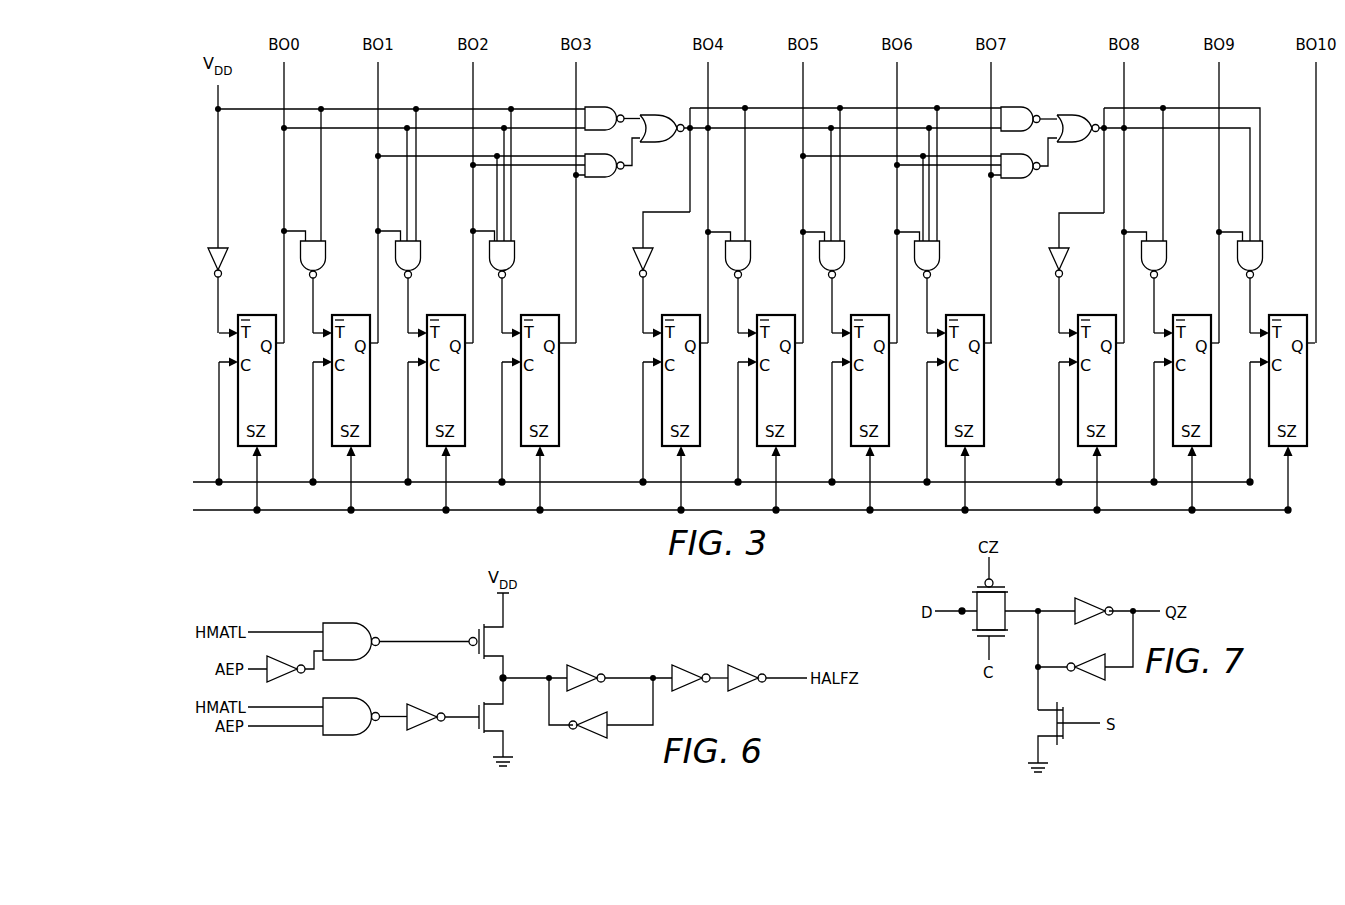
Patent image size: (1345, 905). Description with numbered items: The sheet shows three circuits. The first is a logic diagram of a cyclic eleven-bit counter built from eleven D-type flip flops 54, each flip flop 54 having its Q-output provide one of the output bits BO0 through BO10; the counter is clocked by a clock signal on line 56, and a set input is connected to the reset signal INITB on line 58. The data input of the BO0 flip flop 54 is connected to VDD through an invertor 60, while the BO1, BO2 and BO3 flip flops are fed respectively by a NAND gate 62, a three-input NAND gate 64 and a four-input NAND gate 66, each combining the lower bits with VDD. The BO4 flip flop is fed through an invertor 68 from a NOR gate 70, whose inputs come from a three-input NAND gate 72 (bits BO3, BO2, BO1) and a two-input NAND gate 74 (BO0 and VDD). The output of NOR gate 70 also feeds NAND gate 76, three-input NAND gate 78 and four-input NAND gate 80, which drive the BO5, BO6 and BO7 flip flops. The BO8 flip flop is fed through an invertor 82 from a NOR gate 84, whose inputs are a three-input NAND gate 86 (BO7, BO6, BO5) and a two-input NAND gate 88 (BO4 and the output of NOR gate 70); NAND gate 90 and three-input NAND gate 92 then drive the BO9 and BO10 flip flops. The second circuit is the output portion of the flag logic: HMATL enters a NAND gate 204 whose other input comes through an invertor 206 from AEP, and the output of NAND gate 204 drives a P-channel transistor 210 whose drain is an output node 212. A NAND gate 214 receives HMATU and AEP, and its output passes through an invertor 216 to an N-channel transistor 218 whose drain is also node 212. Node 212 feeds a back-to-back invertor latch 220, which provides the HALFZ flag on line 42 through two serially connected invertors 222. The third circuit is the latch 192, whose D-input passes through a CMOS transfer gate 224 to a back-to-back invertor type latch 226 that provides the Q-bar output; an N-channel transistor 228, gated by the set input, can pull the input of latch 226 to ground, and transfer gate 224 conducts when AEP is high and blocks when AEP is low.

In FIG. 3, the D-type flip flop 54 is at (1299, 405).
In FIG. 3, the clock line 56 is at (588, 481).
In FIG. 3, the reset signal line 58 is at (313, 511).
In FIG. 3, the invertor 60 is at (222, 258).
In FIG. 3, the NAND gate 62 is at (322, 263).
In FIG. 3, the three-input NAND gate 64 is at (417, 263).
In FIG. 3, the four-input NAND gate 66 is at (511, 263).
In FIG. 3, the invertor 68 is at (636, 258).
In FIG. 3, the NOR gate 70 is at (656, 115).
In FIG. 3, the three-input NAND gate 72 is at (600, 178).
In FIG. 3, the two-input NAND gate 74 is at (597, 107).
In FIG. 3, the NAND gate 76 is at (747, 263).
In FIG. 3, the three-input NAND gate 78 is at (841, 263).
In FIG. 3, the four-input NAND gate 80 is at (936, 263).
In FIG. 3, the invertor 82 is at (1053, 262).
In FIG. 3, the NOR gate 84 is at (1074, 143).
In FIG. 3, the three-input NAND gate 86 is at (1010, 178).
In FIG. 3, the two-input NAND gate 88 is at (1030, 107).
In FIG. 3, the NAND gate 90 is at (1163, 263).
In FIG. 3, the three-input NAND gate 92 is at (1258, 263).
In FIG. 6, the NAND gate 204 is at (338, 623).
In FIG. 6, the invertor 206 is at (292, 677).
In FIG. 6, the P-channel transistor 210 is at (478, 622).
In FIG. 6, the output node 212 is at (507, 672).
In FIG. 6, the NAND gate 214 is at (343, 737).
In FIG. 6, the invertor 216 is at (425, 704).
In FIG. 6, the N-channel transistor 218 is at (479, 736).
In FIG. 6, the back-to-back invertor latch 220 is at (641, 705).
In FIG. 6, the serially connected invertors 222 is at (731, 667).
In FIG. 6, the line 42 is at (783, 681).
In FIG. 7, the latch 192 is at (1040, 658).
In FIG. 7, the CMOS transfer gate 224 is at (975, 600).
In FIG. 7, the back-to-back invertor type latch 226 is at (1100, 656).
In FIG. 7, the N-channel transistor 228 is at (1067, 740).